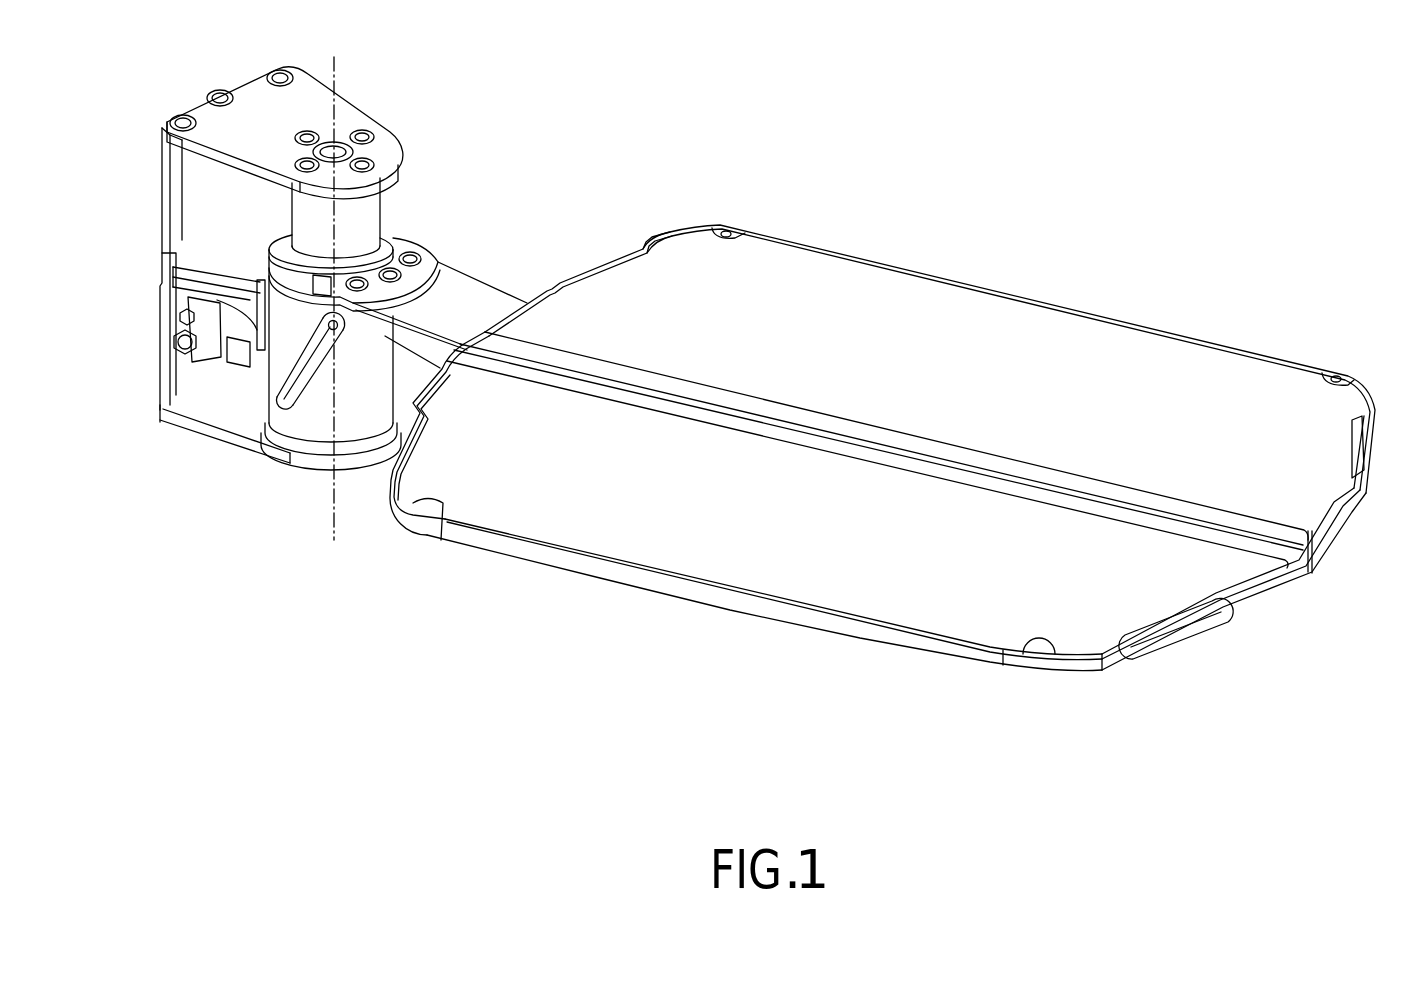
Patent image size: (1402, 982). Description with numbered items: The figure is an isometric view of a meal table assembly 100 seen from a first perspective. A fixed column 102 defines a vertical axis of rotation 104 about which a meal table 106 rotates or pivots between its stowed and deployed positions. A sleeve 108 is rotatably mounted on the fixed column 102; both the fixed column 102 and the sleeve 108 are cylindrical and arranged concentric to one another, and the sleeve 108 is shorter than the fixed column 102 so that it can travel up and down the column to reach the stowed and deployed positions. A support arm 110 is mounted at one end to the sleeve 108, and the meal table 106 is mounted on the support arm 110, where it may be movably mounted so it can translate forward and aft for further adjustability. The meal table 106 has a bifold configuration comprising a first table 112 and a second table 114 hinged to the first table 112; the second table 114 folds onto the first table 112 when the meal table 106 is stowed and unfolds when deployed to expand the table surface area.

The meal table assembly 100 is at (1074, 185).
The fixed column 102 is at (371, 213).
The vertical axis of rotation 104 is at (339, 62).
The meal table 106 is at (882, 438).
The sleeve 108 is at (293, 430).
The support arm 110 is at (465, 290).
The first table 112 is at (1231, 360).
The second table 114 is at (689, 558).